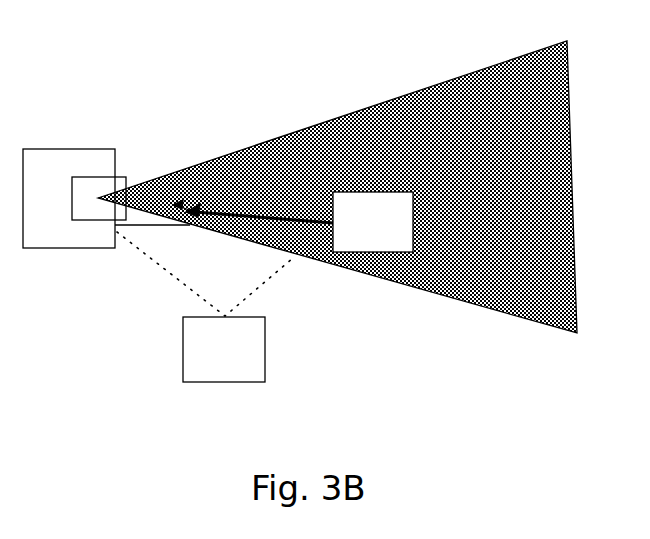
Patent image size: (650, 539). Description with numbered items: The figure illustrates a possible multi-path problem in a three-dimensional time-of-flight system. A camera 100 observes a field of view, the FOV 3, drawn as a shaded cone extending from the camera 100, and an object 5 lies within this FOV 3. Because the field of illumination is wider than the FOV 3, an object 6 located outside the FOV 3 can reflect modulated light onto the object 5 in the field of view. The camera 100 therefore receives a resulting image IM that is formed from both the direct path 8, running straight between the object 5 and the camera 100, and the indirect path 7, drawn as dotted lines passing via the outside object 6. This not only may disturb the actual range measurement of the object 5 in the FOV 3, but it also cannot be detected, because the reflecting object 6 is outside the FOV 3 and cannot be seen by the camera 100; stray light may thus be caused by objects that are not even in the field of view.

The FOV 3 is at (372, 122).
The camera 100 is at (49, 157).
The image IM is at (100, 205).
The object 5 is at (390, 238).
The direct path 8 is at (166, 228).
The indirect path 7 is at (280, 270).
The object 6 is at (247, 360).